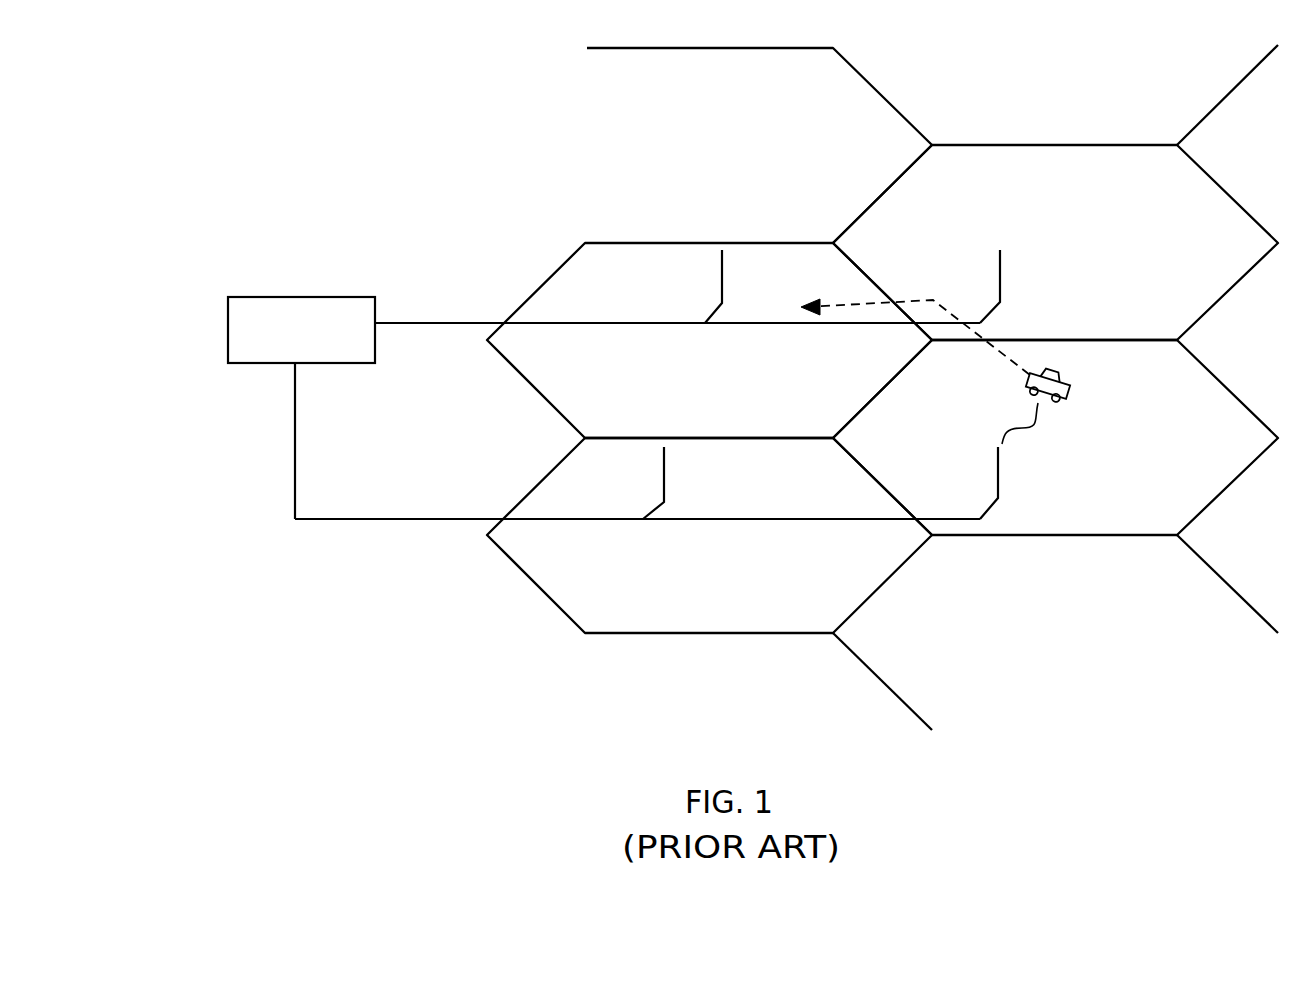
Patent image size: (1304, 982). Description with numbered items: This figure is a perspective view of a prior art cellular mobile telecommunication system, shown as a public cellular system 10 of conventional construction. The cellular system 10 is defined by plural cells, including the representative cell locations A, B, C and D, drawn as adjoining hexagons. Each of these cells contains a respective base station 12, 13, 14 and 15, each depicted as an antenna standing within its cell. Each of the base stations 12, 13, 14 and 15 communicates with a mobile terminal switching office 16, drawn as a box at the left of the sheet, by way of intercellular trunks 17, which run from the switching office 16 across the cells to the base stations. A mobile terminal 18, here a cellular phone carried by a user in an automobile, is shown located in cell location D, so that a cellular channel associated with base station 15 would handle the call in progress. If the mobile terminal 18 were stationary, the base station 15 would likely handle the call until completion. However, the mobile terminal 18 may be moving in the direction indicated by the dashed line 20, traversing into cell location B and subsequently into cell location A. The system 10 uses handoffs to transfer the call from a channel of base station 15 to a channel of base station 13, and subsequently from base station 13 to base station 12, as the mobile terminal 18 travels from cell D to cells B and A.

The public cellular system 10 is at (262, 113).
The base station 12 is at (731, 289).
The base station 13 is at (1007, 274).
The base station 14 is at (676, 491).
The base station 15 is at (1001, 479).
The mobile terminal switching office 16 is at (222, 301).
The intercellular trunks 17 is at (437, 317).
The mobile terminal 18 is at (1075, 389).
The dashed line 20 is at (992, 353).